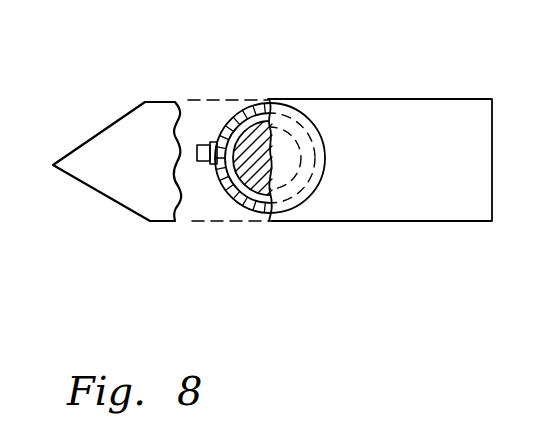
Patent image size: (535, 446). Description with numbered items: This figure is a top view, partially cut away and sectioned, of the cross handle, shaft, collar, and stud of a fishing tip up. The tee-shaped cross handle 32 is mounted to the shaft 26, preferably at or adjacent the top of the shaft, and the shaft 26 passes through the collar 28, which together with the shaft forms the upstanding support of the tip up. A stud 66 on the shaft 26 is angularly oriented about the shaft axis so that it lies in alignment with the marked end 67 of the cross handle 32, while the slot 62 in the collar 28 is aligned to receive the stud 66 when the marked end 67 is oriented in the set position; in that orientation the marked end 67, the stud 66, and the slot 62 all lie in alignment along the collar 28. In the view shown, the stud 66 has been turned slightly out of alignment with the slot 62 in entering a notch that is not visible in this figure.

The cross handle 32 is at (427, 98).
The marked end 67 is at (67, 174).
The stud 66 is at (197, 145).
The slot 62 is at (222, 177).
The collar 28 is at (247, 208).
The shaft 26 is at (260, 168).